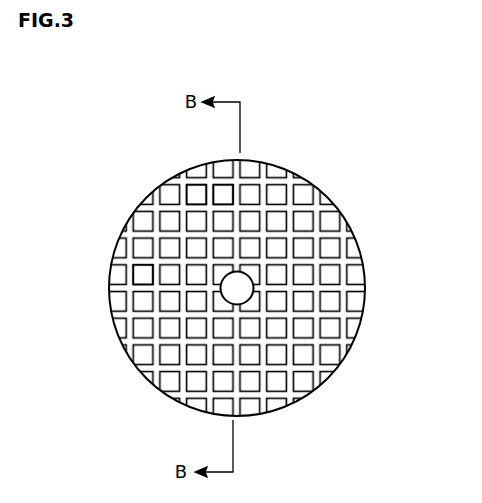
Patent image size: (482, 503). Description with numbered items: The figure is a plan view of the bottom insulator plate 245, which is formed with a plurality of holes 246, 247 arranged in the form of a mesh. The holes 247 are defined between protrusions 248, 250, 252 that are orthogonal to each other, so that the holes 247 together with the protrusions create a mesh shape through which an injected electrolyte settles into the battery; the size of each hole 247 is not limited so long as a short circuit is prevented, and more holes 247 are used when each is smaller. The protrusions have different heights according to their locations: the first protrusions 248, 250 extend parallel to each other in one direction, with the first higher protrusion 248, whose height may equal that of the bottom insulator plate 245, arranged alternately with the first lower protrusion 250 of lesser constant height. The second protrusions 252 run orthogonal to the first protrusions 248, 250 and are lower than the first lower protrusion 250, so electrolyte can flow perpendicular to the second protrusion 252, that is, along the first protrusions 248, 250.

The bottom insulator plate 245 is at (367, 162).
The hole 246 is at (221, 289).
The holes 247 is at (140, 274).
The first higher protrusion 248 is at (199, 181).
The first lower protrusion 250 is at (200, 212).
The second protrusion 252 is at (228, 194).